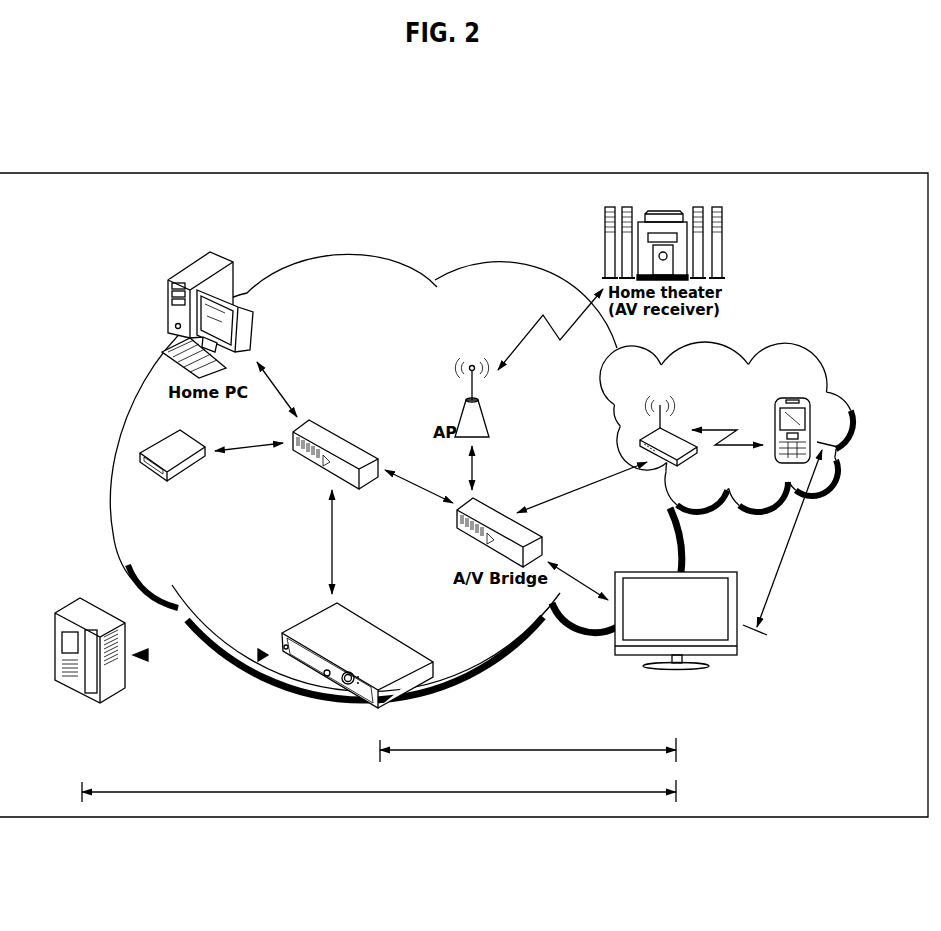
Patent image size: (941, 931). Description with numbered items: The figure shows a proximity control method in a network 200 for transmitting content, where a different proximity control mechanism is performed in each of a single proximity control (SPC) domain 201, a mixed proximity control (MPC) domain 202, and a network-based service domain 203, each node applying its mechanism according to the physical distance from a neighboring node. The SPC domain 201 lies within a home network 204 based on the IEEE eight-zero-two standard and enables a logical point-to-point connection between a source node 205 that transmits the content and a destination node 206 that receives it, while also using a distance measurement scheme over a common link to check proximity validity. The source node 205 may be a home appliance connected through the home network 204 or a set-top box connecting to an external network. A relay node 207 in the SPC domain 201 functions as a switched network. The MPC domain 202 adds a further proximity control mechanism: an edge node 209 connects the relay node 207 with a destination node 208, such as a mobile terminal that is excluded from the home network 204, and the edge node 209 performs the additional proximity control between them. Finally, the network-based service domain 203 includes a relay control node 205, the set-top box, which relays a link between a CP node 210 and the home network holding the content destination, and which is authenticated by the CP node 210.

The network 200 is at (485, 165).
The single proximity control (SPC) domain 201 is at (552, 725).
The mixed proximity control (MPC) domain 202 is at (791, 528).
The network-based service domain 203 is at (383, 791).
The home network 204 is at (348, 278).
The source node 205 is at (384, 631).
The destination node 206 is at (692, 572).
The relay node 207 is at (368, 491).
The destination node 208 is at (808, 401).
The edge node 209 is at (668, 408).
The CP node 210 is at (80, 600).